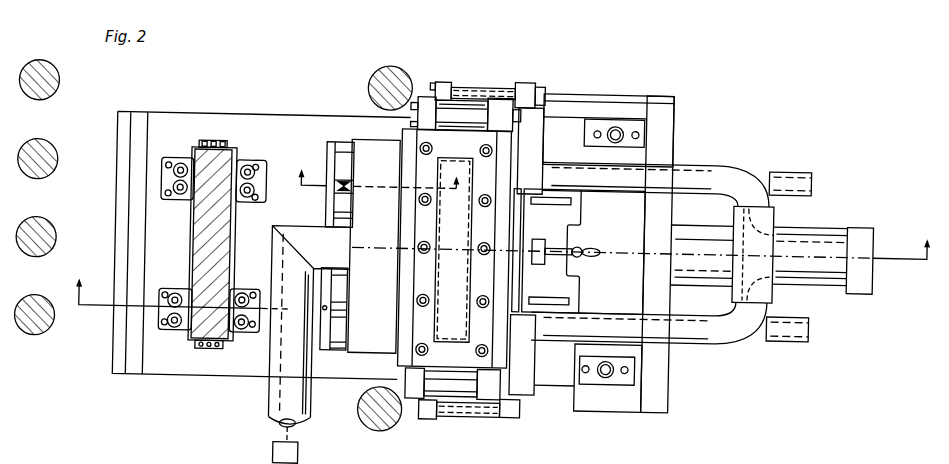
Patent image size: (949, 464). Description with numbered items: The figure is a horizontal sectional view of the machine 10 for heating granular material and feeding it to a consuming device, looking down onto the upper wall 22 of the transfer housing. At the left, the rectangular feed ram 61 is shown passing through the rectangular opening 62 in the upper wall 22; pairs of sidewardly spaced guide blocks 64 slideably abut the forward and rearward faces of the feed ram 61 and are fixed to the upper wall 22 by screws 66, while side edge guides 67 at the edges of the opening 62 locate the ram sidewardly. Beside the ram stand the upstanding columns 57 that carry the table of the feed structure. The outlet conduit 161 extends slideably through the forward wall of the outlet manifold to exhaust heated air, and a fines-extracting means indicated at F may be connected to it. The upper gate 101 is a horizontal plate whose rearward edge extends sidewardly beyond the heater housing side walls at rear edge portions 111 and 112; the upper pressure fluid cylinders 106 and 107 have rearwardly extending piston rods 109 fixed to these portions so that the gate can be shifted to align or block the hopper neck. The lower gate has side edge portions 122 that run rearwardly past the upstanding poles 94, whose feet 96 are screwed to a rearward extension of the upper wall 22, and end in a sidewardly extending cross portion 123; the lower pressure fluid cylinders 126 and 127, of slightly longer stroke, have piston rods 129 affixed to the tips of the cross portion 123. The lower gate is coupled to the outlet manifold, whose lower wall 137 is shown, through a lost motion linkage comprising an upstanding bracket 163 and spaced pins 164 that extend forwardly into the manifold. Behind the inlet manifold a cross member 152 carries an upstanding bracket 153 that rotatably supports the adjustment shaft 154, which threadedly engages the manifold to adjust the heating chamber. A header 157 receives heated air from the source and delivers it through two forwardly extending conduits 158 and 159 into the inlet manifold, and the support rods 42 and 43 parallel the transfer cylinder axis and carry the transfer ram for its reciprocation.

The machine 10 is at (791, 73).
The upper wall 22 is at (275, 115).
The support rod 42 is at (806, 331).
The support rod 43 is at (812, 176).
The upstanding column 57 is at (398, 66).
The feed ram 61 is at (200, 232).
The rectangular opening 62 is at (193, 262).
The guide block 64 is at (178, 160).
The screw 66 is at (177, 172).
The side edge guide 67 is at (212, 142).
The upstanding pole 94 is at (615, 380).
The foot 96 is at (595, 380).
The upper gate 101 is at (363, 347).
The upper pressure fluid cylinder 106 is at (453, 384).
The upper pressure fluid cylinder 107 is at (465, 114).
The piston rod 109 is at (527, 80).
The rear edge portion 111 is at (524, 393).
The rear edge portion 112 is at (538, 86).
The side edge portion 122 is at (614, 146).
The cross portion 123 is at (672, 137).
The lower pressure fluid cylinder 126 is at (470, 414).
The lower pressure fluid cylinder 127 is at (472, 86).
The piston rod 129 is at (634, 96).
The lower wall 137 is at (832, 236).
The cross member 152 is at (581, 291).
The upstanding bracket 153 is at (528, 294).
The adjustment shaft 154 is at (558, 250).
The header 157 is at (774, 224).
The conduit 158 is at (649, 322).
The conduit 159 is at (656, 184).
The outlet conduit 161 is at (286, 405).
The upstanding bracket 163 is at (326, 146).
The pin 164 is at (349, 189).